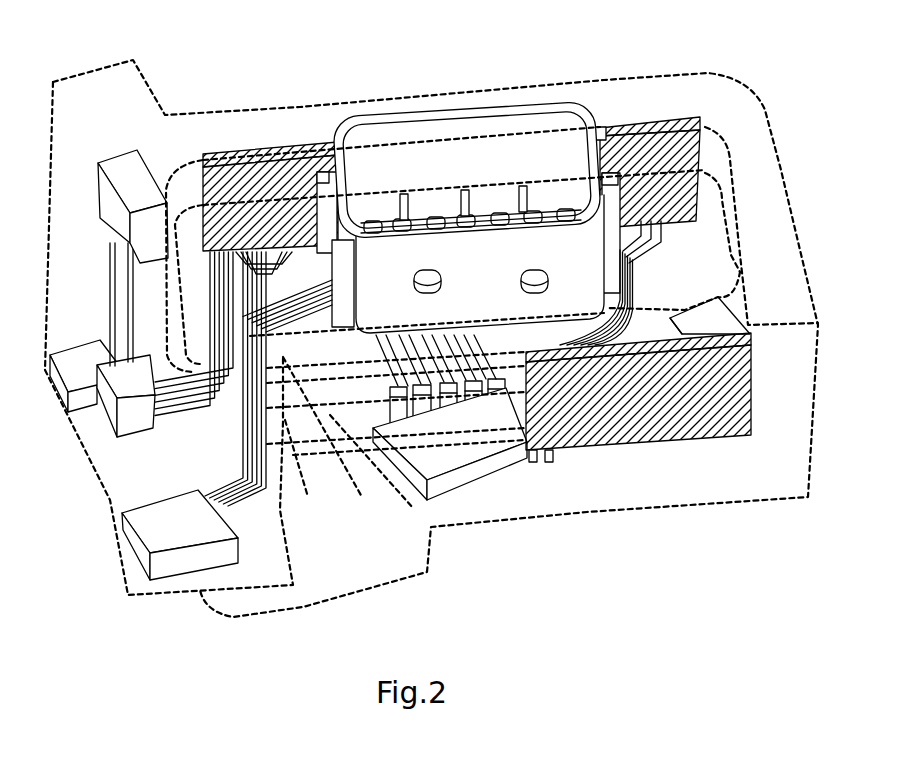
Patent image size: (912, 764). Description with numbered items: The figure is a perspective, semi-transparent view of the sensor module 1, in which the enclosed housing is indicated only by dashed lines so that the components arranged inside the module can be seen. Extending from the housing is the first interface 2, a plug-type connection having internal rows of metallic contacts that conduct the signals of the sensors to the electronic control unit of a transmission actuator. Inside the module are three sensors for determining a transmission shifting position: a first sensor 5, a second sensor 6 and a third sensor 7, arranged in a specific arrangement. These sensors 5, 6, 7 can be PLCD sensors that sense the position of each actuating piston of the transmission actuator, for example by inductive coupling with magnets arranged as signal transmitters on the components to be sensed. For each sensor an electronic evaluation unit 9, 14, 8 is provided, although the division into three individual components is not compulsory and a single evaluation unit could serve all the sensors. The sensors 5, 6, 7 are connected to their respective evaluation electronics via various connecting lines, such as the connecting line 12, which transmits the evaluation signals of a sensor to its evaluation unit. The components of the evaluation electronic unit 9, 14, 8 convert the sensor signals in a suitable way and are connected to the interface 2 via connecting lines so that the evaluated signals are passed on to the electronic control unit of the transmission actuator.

The sensor module 1 is at (765, 68).
The first interface 2 is at (470, 98).
The first sensor 5 is at (108, 143).
The second sensor 6 is at (210, 580).
The third sensor 7 is at (462, 500).
The electronic evaluation unit 8 is at (674, 456).
The electronic evaluation unit 9 is at (272, 146).
The connecting line 12 is at (538, 470).
The electronic evaluation unit 14 is at (641, 118).